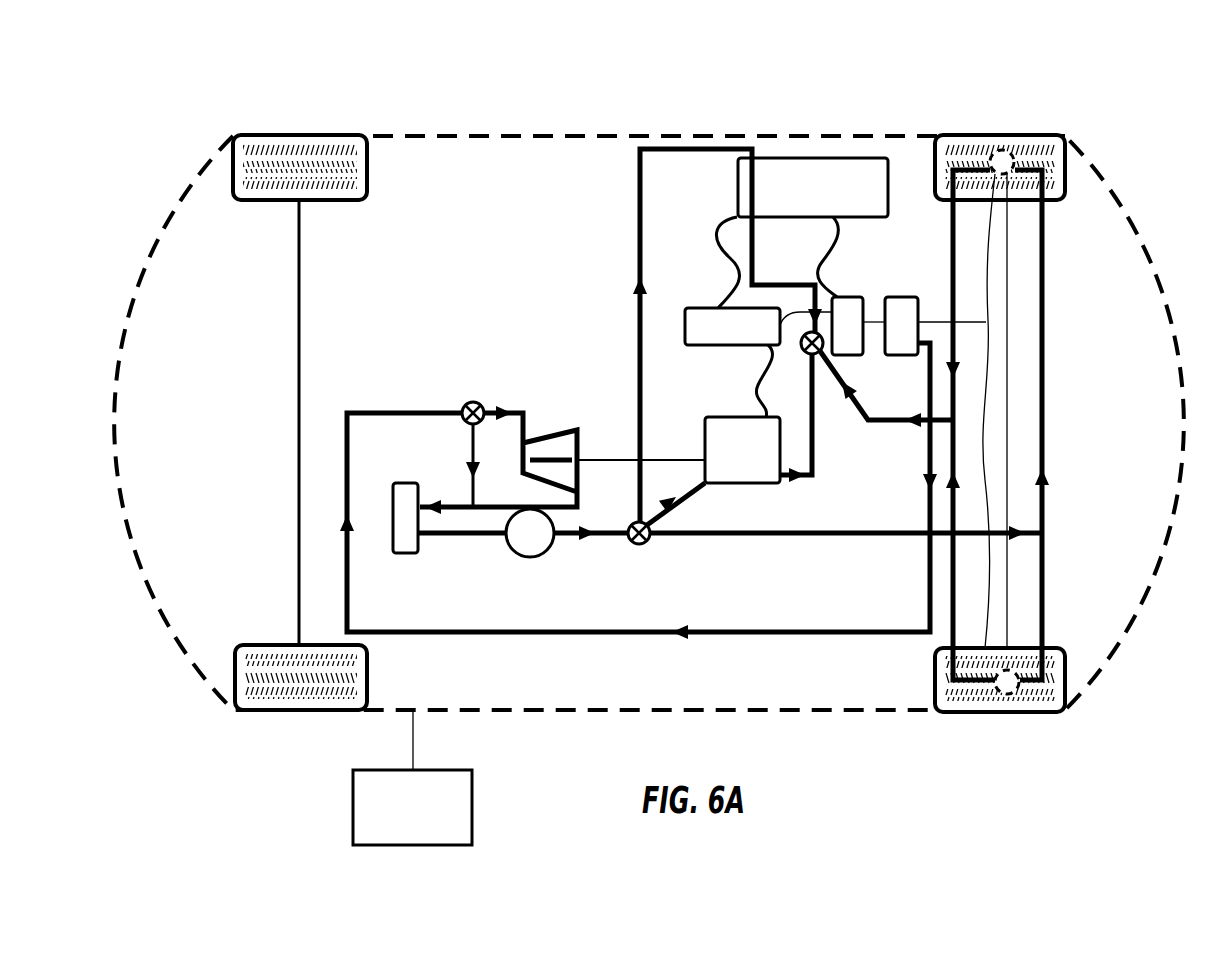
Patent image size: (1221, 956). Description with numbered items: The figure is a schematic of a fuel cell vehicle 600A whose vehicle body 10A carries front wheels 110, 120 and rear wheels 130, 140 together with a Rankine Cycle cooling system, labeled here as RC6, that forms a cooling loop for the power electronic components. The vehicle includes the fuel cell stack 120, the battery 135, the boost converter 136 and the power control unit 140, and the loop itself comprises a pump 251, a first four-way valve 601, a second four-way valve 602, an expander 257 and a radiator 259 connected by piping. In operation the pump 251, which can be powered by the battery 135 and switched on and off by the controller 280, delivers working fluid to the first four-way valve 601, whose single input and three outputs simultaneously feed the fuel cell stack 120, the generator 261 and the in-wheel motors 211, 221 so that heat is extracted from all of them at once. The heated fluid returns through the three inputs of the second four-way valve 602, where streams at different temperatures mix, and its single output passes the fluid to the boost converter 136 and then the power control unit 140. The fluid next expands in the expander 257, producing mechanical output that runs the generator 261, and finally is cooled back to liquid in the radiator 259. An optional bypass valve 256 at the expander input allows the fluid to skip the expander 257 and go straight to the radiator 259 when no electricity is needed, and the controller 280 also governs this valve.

The fuel cell vehicle 600A is at (1138, 88).
The vehicle body 10A is at (582, 124).
The rear wheel 130 is at (235, 140).
The front wheel 110 is at (1050, 140).
The in-wheel motor 211 is at (998, 150).
The fuel cell stack 120 is at (1047, 705).
The power control unit 140 is at (237, 680).
The in-wheel motor 221 is at (1005, 692).
The refrigerant circuit RC6 is at (388, 350).
The battery 135 is at (732, 326).
The boost converter 136 is at (847, 326).
The second four-way valve 602 is at (808, 356).
The first four-way valve 601 is at (634, 548).
The bypass valve 256 is at (478, 403).
The expander 257 is at (572, 428).
The radiator 259 is at (393, 497).
The generator 261 is at (742, 450).
The pump 251 is at (530, 533).
The controller 280 is at (412, 777).